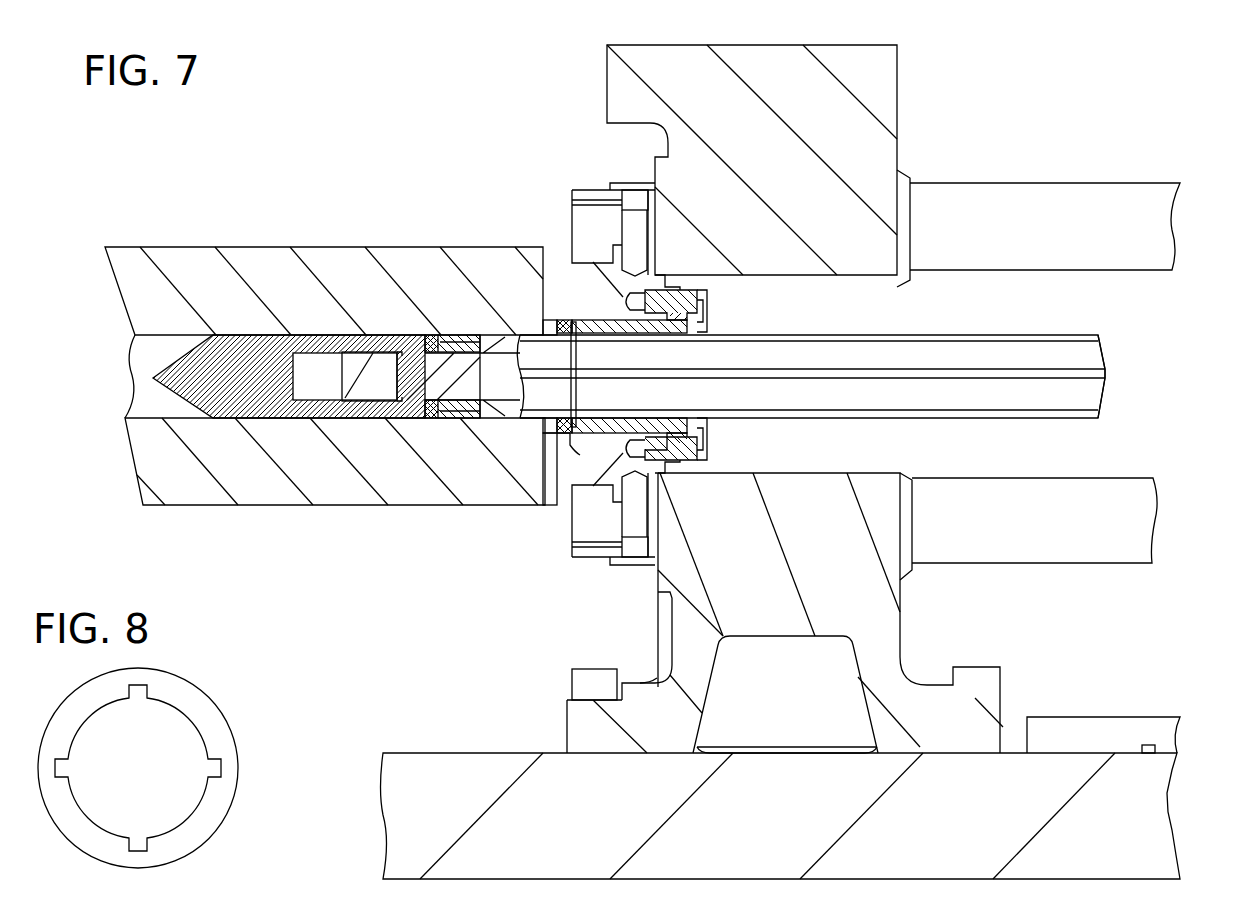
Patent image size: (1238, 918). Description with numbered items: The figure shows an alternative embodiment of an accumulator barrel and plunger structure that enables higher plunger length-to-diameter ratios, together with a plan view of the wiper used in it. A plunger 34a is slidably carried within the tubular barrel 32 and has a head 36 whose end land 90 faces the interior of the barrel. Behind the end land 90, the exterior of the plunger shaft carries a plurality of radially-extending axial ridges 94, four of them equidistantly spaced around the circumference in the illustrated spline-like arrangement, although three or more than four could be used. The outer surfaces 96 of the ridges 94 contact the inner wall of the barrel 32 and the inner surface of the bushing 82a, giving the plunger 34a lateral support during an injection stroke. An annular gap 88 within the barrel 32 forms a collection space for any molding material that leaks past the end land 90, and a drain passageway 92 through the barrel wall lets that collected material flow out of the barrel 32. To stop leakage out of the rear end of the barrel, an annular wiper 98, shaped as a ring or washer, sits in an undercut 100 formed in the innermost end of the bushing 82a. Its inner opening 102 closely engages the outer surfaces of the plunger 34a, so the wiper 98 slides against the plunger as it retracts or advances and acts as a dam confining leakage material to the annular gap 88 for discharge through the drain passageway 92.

In FIG. 7, the barrel 32 is at (345, 260).
In FIG. 7, the head 36 is at (253, 347).
In FIG. 7, the annular gap 88 is at (550, 320).
In FIG. 7, the bushing 82a is at (618, 318).
In FIG. 7, the radial ridges 94 is at (735, 365).
In FIG. 7, the outer surfaces 96 is at (1005, 330).
In FIG. 7, the wiper 98 is at (577, 398).
In FIG. 8, the wiper 98 is at (178, 690).
In FIG. 7, the undercut 100 is at (570, 437).
In FIG. 7, the plunger 34a is at (940, 400).
In FIG. 7, the end land 90 is at (420, 418).
In FIG. 7, the drain passageway 92 is at (548, 505).
In FIG. 8, the inner opening 102 is at (178, 795).